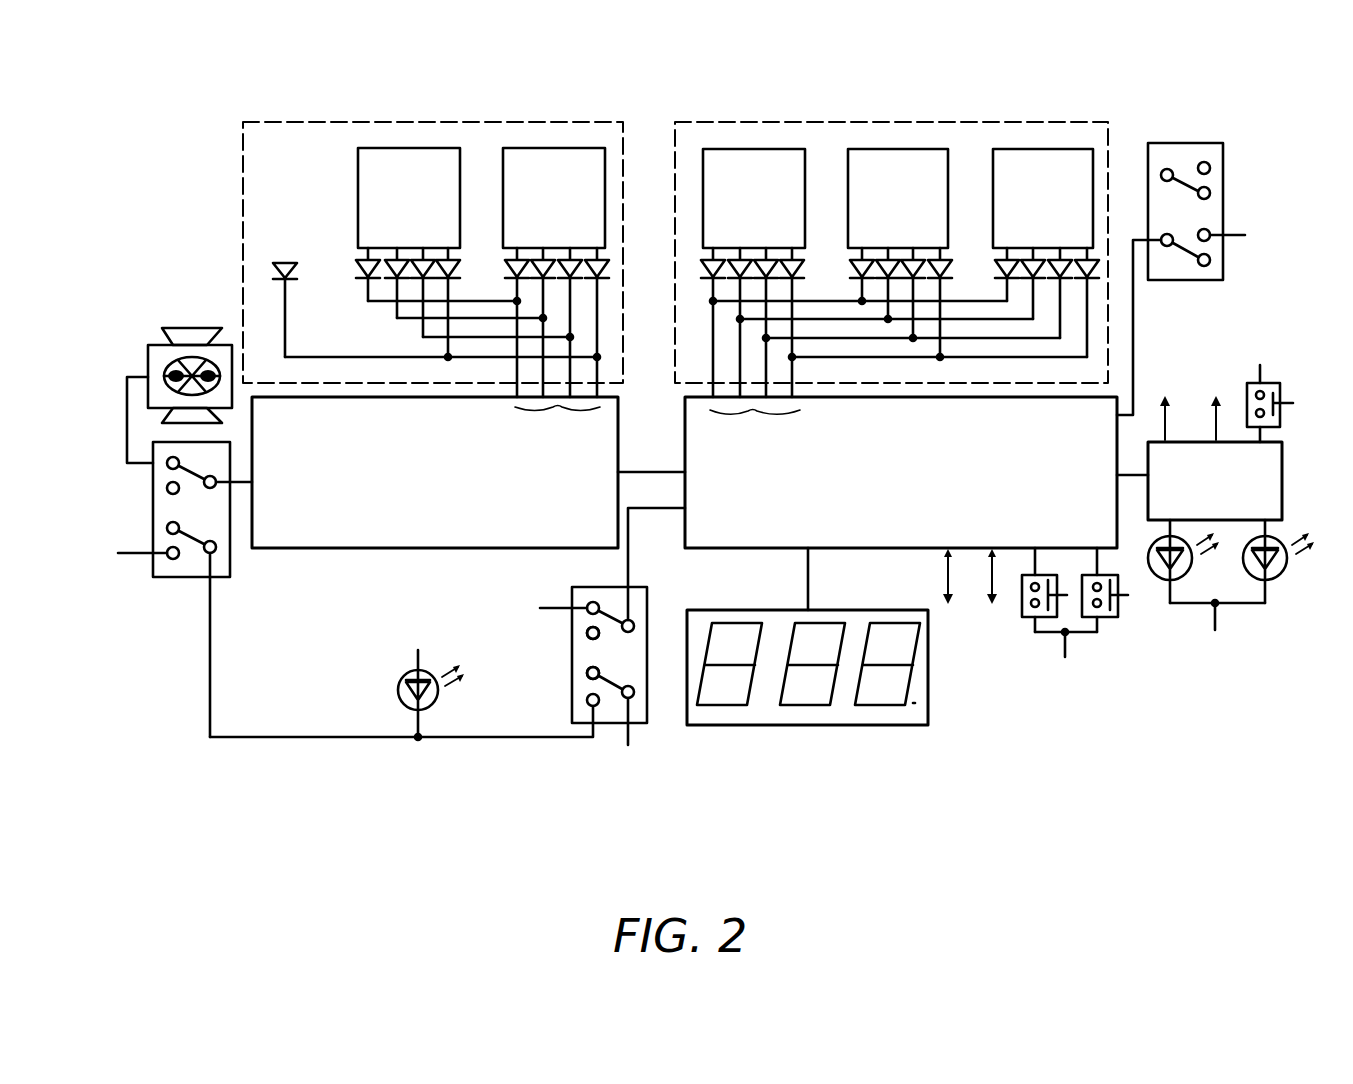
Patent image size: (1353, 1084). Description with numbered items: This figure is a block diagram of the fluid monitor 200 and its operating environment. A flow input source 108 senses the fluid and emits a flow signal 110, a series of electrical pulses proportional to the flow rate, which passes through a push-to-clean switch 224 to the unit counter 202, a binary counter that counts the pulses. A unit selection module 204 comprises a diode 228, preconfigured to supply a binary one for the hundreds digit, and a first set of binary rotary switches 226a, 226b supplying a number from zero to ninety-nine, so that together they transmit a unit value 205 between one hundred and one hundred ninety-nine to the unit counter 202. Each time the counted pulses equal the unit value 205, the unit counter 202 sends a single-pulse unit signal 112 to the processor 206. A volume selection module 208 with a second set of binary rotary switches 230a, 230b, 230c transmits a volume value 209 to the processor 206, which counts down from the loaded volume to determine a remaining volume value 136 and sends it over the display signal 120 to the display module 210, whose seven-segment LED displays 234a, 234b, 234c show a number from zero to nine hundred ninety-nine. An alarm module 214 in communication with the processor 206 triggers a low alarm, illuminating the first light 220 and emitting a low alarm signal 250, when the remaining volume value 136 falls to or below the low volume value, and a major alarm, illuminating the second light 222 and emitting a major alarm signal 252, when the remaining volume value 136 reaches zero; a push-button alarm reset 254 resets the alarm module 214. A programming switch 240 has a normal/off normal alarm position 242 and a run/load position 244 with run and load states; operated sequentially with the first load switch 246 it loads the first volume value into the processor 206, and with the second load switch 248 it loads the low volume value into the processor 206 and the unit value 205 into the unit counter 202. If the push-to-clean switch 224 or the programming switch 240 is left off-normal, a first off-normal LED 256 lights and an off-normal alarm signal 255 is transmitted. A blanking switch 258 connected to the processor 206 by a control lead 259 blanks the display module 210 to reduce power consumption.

The fluid monitor 200 is at (252, 71).
The unit selection module 204 is at (592, 120).
The volume selection module 208 is at (772, 120).
The first set of binary rotary switches 226a is at (378, 212).
The first set of binary rotary switches 226b is at (523, 212).
The second set of binary rotary switches 230a is at (722, 212).
The second set of binary rotary switches 230b is at (866, 212).
The second set of binary rotary switches 230c is at (1011, 212).
The diode 228 is at (275, 264).
The flow input source 108 is at (158, 343).
The flow signal 110 is at (127, 407).
The push-to-clean switch 224 is at (153, 505).
The unit counter 202 is at (404, 492).
The processor 206 is at (869, 497).
The unit value 205 is at (556, 410).
The volume value 209 is at (748, 414).
The unit signal 112 is at (667, 470).
The display signal 120 is at (808, 578).
The display module 210 is at (856, 697).
The remaining volume value 136 is at (922, 704).
The seven-segment LED display 234a is at (733, 703).
The seven-segment LED display 234b is at (813, 703).
The seven-segment LED display 234c is at (888, 703).
The first off-normal LED 256 is at (400, 680).
The programming switch 240 is at (610, 725).
The normal/off normal alarm position 242 is at (580, 688).
The run/load position 244 is at (580, 635).
The off-normal alarm signal 255 is at (946, 582).
The control lead 259 is at (996, 590).
The second load switch 248 is at (1027, 620).
The first load switch 246 is at (1108, 618).
The blanking switch 258 is at (1225, 158).
The alarm module 214 is at (1187, 497).
The low alarm signal 250 is at (1185, 375).
The major alarm signal 252 is at (1218, 415).
The alarm reset 254 is at (1267, 383).
The first light 220 is at (1180, 577).
The second light 222 is at (1277, 575).